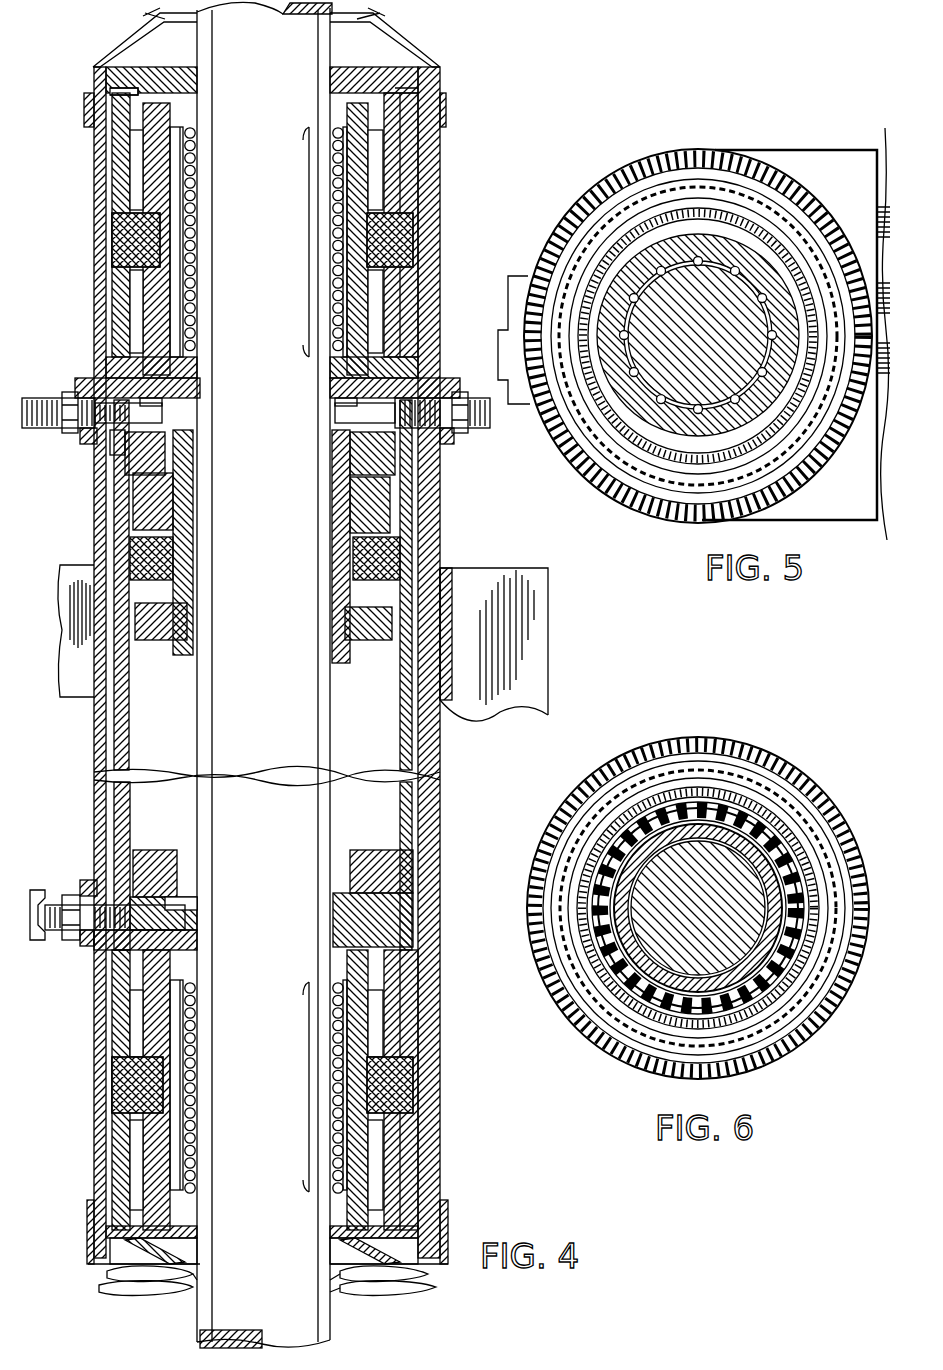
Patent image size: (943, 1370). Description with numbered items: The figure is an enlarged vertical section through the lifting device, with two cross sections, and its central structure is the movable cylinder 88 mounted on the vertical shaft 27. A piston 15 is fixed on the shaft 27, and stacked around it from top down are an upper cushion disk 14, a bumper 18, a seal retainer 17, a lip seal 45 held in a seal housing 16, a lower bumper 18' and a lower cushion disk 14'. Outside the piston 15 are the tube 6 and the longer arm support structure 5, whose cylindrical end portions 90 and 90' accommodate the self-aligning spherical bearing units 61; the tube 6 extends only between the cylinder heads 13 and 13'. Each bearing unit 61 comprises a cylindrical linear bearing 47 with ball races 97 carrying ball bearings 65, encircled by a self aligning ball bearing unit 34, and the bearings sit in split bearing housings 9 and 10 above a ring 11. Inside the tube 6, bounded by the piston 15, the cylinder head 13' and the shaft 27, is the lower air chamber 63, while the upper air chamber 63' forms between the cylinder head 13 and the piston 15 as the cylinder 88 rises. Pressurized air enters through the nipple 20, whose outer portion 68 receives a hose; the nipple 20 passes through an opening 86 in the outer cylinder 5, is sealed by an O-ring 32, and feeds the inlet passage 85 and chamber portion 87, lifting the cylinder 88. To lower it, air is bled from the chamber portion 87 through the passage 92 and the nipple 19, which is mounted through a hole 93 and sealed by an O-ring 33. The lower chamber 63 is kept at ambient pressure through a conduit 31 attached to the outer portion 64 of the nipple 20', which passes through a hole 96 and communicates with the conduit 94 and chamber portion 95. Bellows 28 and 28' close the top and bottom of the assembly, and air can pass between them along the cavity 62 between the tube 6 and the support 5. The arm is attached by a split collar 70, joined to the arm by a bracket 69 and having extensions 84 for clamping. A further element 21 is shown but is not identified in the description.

In FIG. 4, the arm support structure 5 is at (88, 207).
In FIG. 5, the arm support structure 5 is at (715, 157).
In FIG. 6, the arm support structure 5 is at (720, 740).
In FIG. 4, the tube 6 is at (85, 540).
In FIG. 6, the tube 6 is at (772, 770).
In FIG. 4, the split bearing housing 9 is at (437, 130).
In FIG. 5, the split bearing housing 9 is at (604, 200).
In FIG. 4, the split bearing housing 10 is at (422, 318).
In FIG. 4, the ring 11 is at (413, 232).
In FIG. 5, the ring 11 is at (660, 187).
In FIG. 4, the cylinder head 13 is at (285, 360).
In FIG. 4, the cylinder head 13' is at (408, 898).
In FIG. 4, the upper cushion disk 14 is at (334, 495).
In FIG. 4, the lower cushion disk 14' is at (334, 632).
In FIG. 4, the piston 15 is at (335, 580).
In FIG. 6, the piston 15 is at (640, 990).
In FIG. 4, the seal housing 16 is at (400, 575).
In FIG. 6, the seal housing 16 is at (775, 1000).
In FIG. 4, the seal retainer 17 is at (360, 510).
In FIG. 4, the bumper 18 is at (193, 501).
In FIG. 4, the lower bumper 18' is at (195, 621).
In FIG. 4, the nipple 19 is at (448, 398).
In FIG. 4, the nipple 20 is at (119, 371).
In FIG. 4, the nipple 20' is at (128, 960).
In FIG. 4, the end cap 21 is at (388, 108).
In FIG. 4, the vertical shaft 27 is at (205, 1306).
In FIG. 5, the vertical shaft 27 is at (722, 320).
In FIG. 6, the vertical shaft 27 is at (692, 918).
In FIG. 4, the bellows 28 is at (272, 37).
In FIG. 4, the bellows 28' is at (278, 1295).
In FIG. 4, the conduit 31 is at (42, 890).
In FIG. 4, the O-ring 32 is at (78, 432).
In FIG. 4, the O-ring 33 is at (454, 432).
In FIG. 4, the self aligning ball bearing unit 34 is at (413, 252).
In FIG. 5, the self aligning ball bearing unit 34 is at (640, 455).
In FIG. 4, the lip seal 45 is at (410, 540).
In FIG. 6, the lip seal 45 is at (628, 785).
In FIG. 4, the cylindrical linear bearing 47 is at (400, 280).
In FIG. 5, the cylindrical linear bearing 47 is at (668, 425).
In FIG. 4, the self-aligning spherical bearing unit 61 is at (303, 218).
In FIG. 4, the cavity 62 is at (408, 747).
In FIG. 4, the lower air chamber 63 is at (276, 585).
In FIG. 4, the upper air chamber 63' is at (79, 554).
In FIG. 4, the outer portion 64 is at (58, 932).
In FIG. 4, the ball bearings 65 is at (333, 196).
In FIG. 5, the ball bearings 65 is at (664, 388).
In FIG. 4, the outer portion 68 is at (42, 398).
In FIG. 4, the bracket 69 is at (548, 600).
In FIG. 5, the bracket 69 is at (878, 522).
In FIG. 4, the split collar 70 is at (445, 690).
In FIG. 5, the split collar 70 is at (818, 150).
In FIG. 4, the extensions 84 is at (82, 682).
In FIG. 5, the extensions 84 is at (512, 275).
In FIG. 4, the inlet passage 85 is at (118, 367).
In FIG. 4, the opening 86 is at (100, 450).
In FIG. 4, the chamber portion 87 is at (185, 446).
In FIG. 4, the cylinder 88 is at (92, 772).
In FIG. 4, the end portion 90 is at (75, 280).
In FIG. 4, the end portion 90' is at (464, 1030).
In FIG. 4, the passage 92 is at (332, 380).
In FIG. 4, the hole 93 is at (420, 478).
In FIG. 4, the conduit 94 is at (150, 928).
In FIG. 4, the chamber portion 95 is at (185, 872).
In FIG. 4, the hole 96 is at (98, 960).
In FIG. 4, the ball races 97 is at (188, 186).